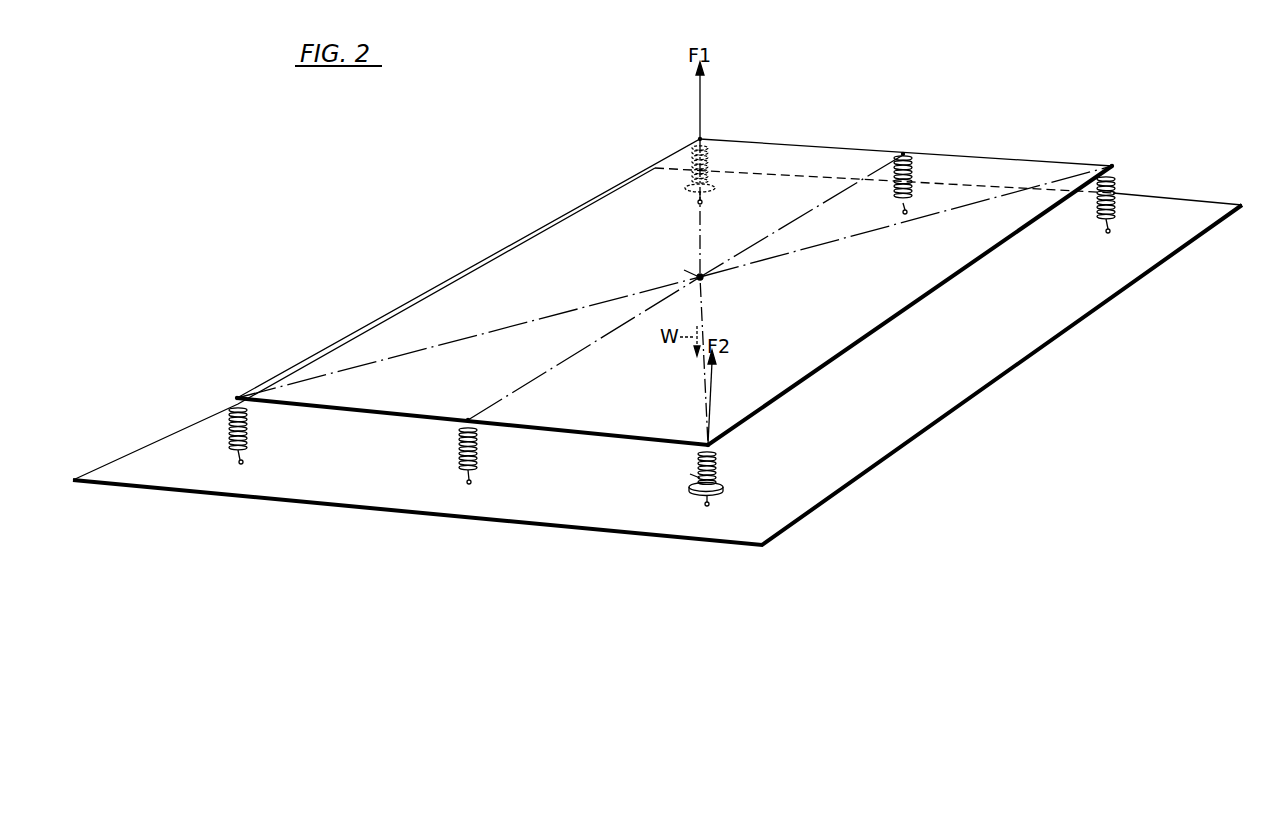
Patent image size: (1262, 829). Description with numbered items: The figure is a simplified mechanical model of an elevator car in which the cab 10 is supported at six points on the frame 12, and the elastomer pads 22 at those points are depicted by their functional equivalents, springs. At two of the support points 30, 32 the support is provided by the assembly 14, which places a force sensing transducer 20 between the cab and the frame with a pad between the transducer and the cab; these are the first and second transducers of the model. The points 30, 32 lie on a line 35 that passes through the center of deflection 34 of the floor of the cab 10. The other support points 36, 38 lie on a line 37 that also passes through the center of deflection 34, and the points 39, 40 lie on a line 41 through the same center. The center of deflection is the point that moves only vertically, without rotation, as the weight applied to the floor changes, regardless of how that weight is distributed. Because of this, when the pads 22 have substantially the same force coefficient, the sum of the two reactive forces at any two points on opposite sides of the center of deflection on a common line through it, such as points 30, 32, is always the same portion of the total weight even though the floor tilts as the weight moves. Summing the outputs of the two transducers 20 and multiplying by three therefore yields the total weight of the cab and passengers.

The cab 10 is at (530, 244).
The frame 12 is at (990, 373).
The assembly 14 is at (692, 475).
The transducer 20 is at (690, 183).
The pad 22 is at (714, 157).
The support point 30 is at (696, 137).
The support point 32 is at (706, 442).
The center of deflection 34 is at (699, 274).
The line 35 is at (703, 241).
The support point 36 is at (237, 396).
The line 37 is at (467, 338).
The support point 38 is at (1110, 165).
The support point 39 is at (462, 422).
The support point 40 is at (904, 153).
The line 41 is at (568, 359).